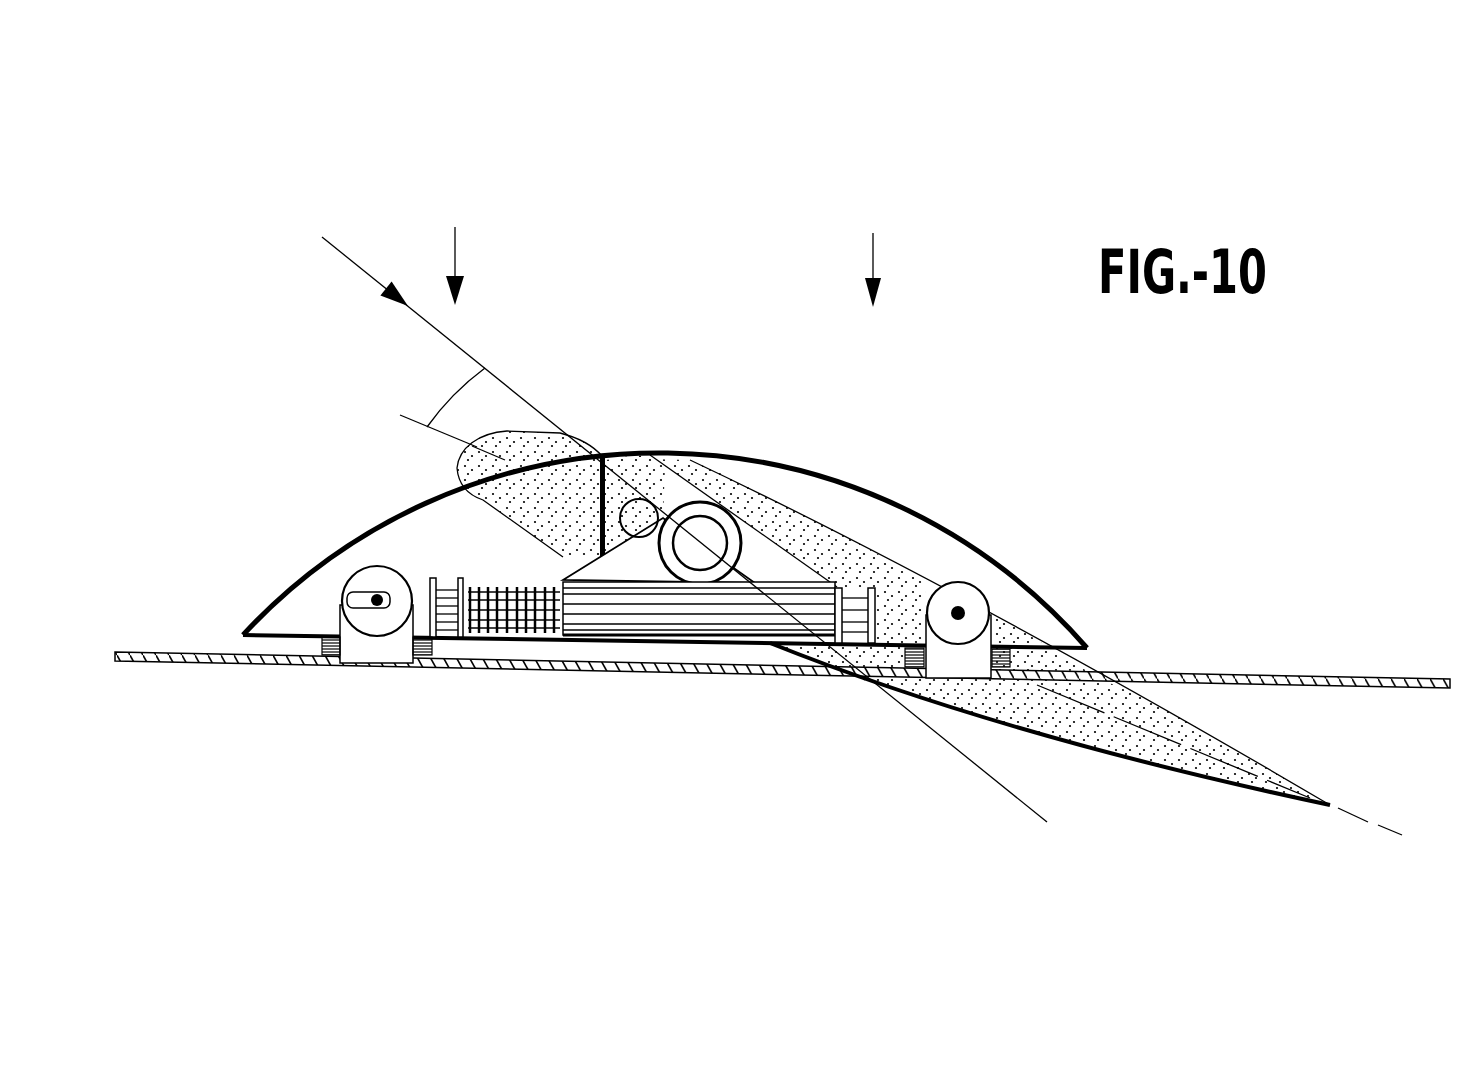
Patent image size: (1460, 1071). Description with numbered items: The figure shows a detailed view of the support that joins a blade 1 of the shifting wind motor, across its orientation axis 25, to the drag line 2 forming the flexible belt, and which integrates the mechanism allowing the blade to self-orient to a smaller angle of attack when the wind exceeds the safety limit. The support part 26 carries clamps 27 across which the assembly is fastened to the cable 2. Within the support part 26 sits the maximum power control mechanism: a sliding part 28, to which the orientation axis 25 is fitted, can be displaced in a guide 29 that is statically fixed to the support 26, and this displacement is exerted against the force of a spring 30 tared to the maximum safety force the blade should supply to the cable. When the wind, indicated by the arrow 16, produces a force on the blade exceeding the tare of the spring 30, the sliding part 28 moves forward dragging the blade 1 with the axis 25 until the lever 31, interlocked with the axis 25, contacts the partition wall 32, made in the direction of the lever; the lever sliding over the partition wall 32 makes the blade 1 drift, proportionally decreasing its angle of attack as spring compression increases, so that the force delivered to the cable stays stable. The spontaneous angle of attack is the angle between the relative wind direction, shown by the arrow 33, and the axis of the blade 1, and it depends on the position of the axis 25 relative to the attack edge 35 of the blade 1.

The blade 1 is at (815, 545).
The drag line 2 is at (1228, 673).
The wind direction arrow 16 is at (458, 243).
The orientation axis 25 is at (703, 523).
The support part 26 is at (935, 523).
The clamps 27 is at (375, 622).
The sliding part 28 is at (700, 637).
The guide 29 is at (447, 607).
The spring 30 is at (522, 637).
The lever 31 is at (632, 502).
The partition wall 32 is at (597, 525).
The relative wind direction arrow 33 is at (343, 250).
The attack edge 35 is at (462, 447).